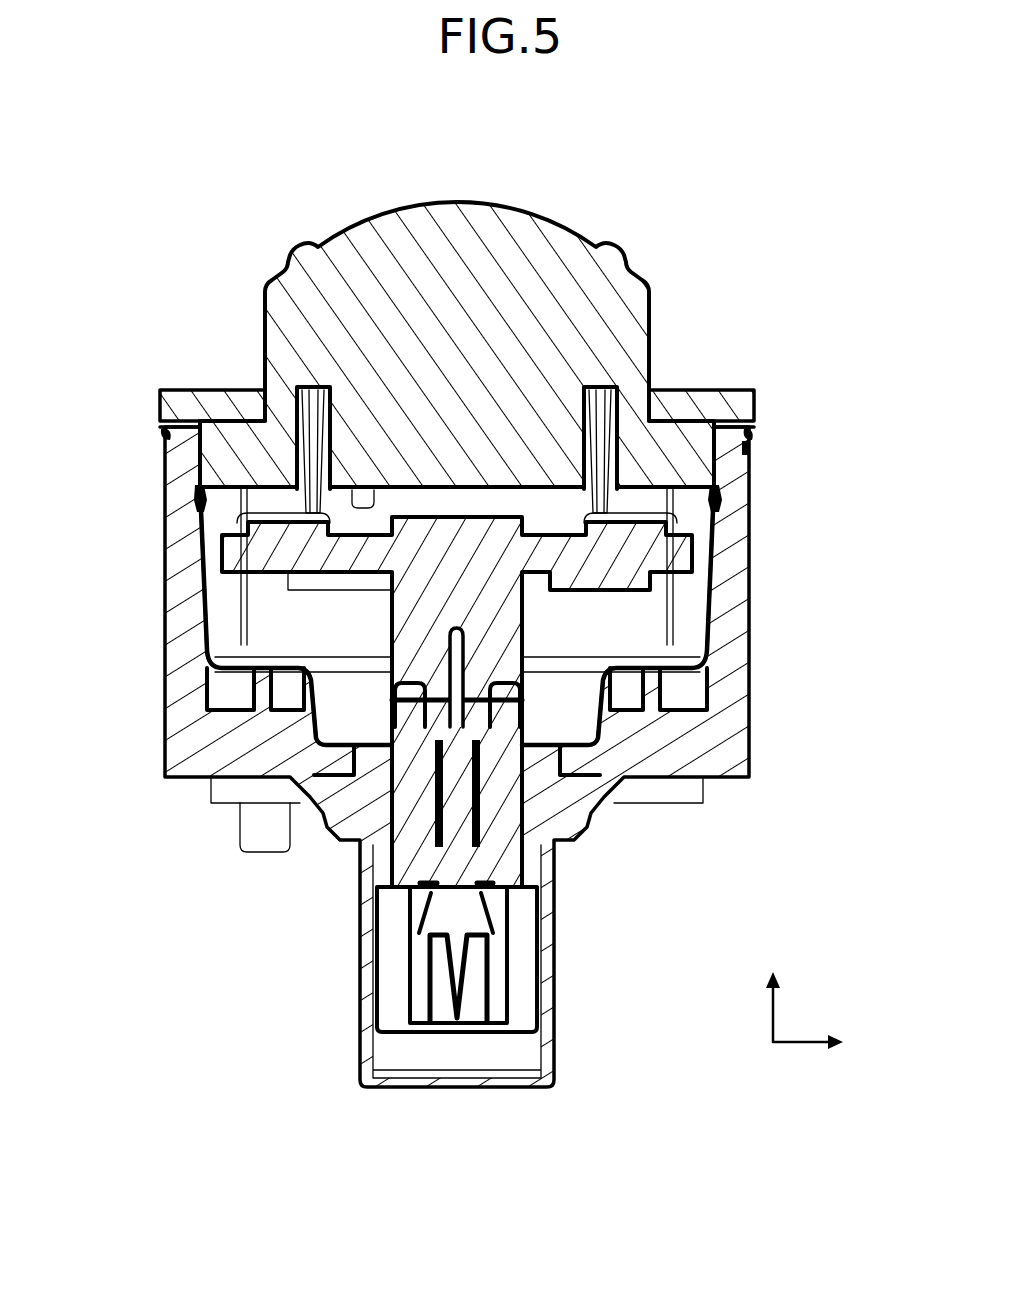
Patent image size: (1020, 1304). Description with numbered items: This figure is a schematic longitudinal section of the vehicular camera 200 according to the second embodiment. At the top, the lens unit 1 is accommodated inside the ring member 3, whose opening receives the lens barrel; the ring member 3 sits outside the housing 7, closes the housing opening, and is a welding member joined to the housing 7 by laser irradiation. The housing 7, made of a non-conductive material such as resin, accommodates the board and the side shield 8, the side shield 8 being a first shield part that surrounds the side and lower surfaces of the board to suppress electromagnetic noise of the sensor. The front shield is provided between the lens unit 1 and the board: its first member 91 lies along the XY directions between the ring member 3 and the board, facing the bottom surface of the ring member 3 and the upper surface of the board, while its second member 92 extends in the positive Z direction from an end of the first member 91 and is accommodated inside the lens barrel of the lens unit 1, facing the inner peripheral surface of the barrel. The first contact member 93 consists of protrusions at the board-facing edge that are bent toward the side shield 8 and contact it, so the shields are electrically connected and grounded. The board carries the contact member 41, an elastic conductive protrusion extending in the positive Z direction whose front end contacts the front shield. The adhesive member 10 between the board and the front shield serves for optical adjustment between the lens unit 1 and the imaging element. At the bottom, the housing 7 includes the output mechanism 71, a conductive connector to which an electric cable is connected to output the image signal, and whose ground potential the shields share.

The vehicular camera 200 is at (703, 180).
The lens unit 1 is at (543, 216).
The ring member 3 is at (708, 391).
The contact member 41 is at (372, 491).
The housing 7 is at (752, 547).
The side shield 8 is at (712, 627).
The first member 91 is at (752, 448).
The second member 92 is at (603, 402).
The first contact member 93 is at (722, 498).
The adhesive member 10 is at (248, 525).
The output mechanism 71 is at (522, 968).